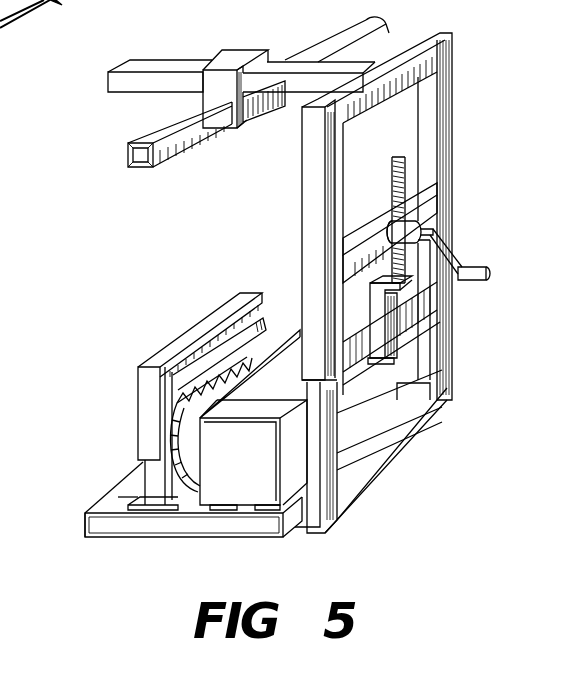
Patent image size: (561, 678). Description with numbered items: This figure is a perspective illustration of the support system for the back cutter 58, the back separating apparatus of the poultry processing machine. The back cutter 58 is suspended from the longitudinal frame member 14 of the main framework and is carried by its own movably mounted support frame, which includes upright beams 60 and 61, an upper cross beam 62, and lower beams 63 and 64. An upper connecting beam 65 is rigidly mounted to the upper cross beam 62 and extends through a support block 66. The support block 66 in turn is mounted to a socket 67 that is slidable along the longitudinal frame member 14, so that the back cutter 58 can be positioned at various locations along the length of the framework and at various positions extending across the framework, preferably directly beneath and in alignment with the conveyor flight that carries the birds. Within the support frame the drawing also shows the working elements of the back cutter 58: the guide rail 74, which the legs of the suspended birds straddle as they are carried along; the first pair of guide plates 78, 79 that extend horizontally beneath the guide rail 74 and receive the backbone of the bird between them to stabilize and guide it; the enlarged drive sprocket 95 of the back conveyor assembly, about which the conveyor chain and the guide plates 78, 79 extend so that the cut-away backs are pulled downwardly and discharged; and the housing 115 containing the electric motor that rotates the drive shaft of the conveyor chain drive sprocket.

The back cutter 58 is at (78, 289).
The longitudinal frame member 14 is at (162, 133).
The upright beam 60 is at (303, 183).
The upright beam 61 is at (423, 110).
The upper cross beam 62 is at (407, 50).
The lower beam 63 is at (168, 527).
The lower beam 64 is at (120, 490).
The upper connecting beam 65 is at (191, 66).
The support block 66 is at (242, 56).
The socket 67 is at (253, 113).
The guide rail 74 is at (190, 332).
The guide plate 78 is at (285, 276).
The guide plate 79 is at (219, 354).
The enlarged drive sprocket 95 is at (192, 452).
The housing 115 is at (271, 411).